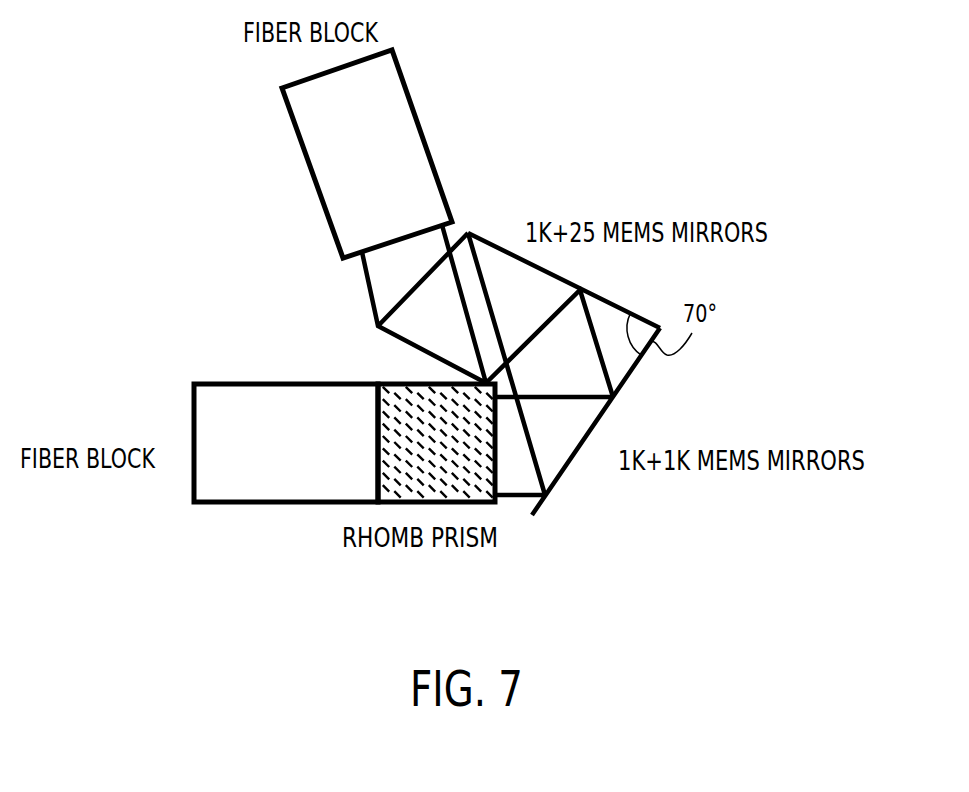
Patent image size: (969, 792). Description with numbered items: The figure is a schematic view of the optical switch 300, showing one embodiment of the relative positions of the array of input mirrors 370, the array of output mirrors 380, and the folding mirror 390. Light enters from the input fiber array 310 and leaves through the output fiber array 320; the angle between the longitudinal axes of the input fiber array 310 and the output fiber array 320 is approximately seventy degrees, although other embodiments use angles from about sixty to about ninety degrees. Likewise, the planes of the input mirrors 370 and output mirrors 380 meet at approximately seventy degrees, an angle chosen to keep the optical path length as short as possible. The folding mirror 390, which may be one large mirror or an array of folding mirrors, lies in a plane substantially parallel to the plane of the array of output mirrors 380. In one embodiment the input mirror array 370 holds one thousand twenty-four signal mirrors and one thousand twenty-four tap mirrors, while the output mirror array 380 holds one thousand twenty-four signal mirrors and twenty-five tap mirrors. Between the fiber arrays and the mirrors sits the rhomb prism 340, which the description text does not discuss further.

The switch 300 is at (561, 125).
The input fiber array 310 is at (253, 503).
The output fiber array 320 is at (410, 100).
The rhomb prism 340 is at (497, 504).
The array of input mirrors 370 is at (603, 417).
The array of output mirrors 380 is at (610, 297).
The folding mirror 390 is at (395, 339).